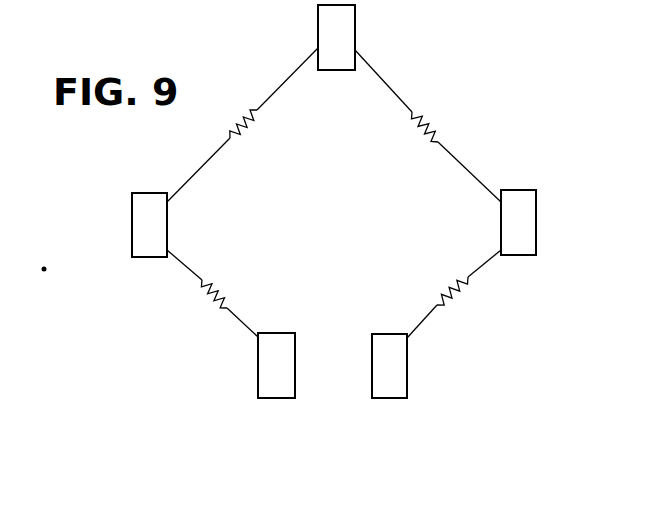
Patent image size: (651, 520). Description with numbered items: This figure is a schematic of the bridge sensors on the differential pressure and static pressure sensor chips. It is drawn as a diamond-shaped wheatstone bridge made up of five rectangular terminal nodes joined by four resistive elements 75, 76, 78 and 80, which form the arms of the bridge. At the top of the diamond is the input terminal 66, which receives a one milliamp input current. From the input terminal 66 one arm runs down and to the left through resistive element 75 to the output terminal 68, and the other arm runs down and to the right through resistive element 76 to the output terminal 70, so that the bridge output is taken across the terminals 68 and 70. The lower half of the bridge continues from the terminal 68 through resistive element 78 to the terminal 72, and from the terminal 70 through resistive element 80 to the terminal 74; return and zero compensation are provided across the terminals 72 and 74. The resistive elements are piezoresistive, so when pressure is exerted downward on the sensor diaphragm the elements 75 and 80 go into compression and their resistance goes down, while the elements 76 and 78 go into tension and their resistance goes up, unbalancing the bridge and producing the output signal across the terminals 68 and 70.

The input terminal 66 is at (345, 42).
The output terminal 68 is at (140, 220).
The output terminal 70 is at (501, 230).
The return and zero compensation terminal 72 is at (267, 388).
The return and zero compensation terminal 74 is at (388, 342).
The resistive element 75 is at (236, 143).
The resistive element 76 is at (430, 122).
The resistive element 78 is at (212, 300).
The resistive element 80 is at (455, 303).